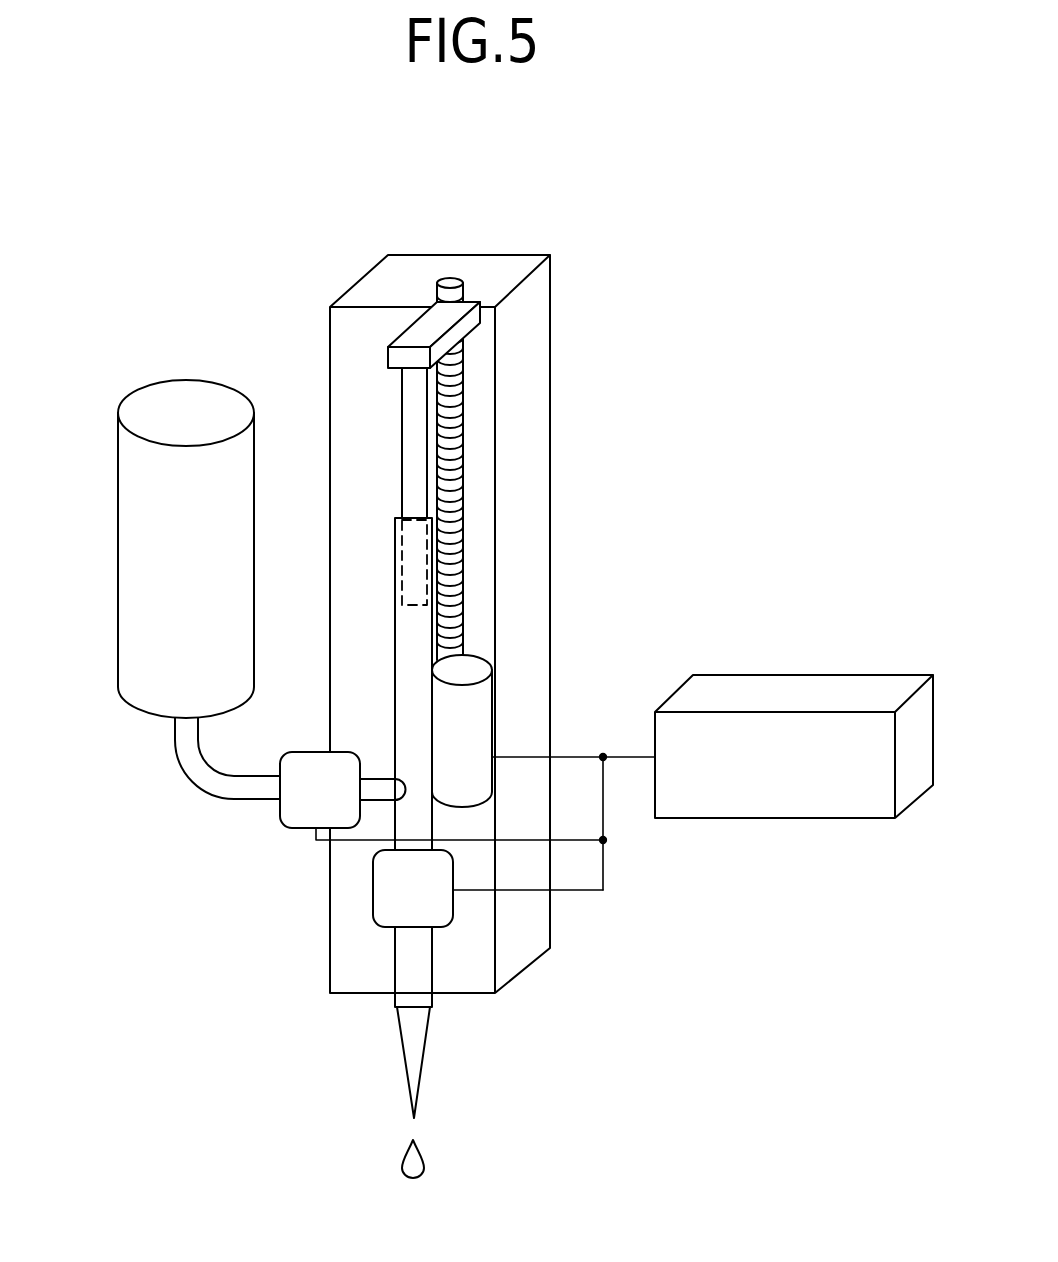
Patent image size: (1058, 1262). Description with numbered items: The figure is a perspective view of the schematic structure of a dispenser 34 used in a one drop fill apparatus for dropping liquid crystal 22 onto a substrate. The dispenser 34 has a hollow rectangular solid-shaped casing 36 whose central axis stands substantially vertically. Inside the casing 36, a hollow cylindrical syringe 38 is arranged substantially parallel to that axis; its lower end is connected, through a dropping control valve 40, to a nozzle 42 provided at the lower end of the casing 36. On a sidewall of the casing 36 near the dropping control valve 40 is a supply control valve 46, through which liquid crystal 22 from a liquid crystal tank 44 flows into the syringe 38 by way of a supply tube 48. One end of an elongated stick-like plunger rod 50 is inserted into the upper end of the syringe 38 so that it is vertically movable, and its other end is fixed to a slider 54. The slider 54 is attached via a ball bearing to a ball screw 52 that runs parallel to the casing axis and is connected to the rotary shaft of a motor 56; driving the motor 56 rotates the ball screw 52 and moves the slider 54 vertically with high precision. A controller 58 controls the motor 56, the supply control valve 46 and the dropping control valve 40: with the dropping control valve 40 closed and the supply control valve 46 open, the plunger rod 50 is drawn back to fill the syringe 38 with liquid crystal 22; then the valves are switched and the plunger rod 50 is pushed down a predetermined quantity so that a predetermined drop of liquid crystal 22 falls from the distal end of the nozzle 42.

The liquid crystal 22 is at (423, 1160).
The dispenser 34 is at (528, 222).
The casing 36 is at (552, 437).
The syringe 38 is at (405, 670).
The dropping control valve 40 is at (395, 906).
The nozzle 42 is at (412, 1058).
The liquid crystal tank 44 is at (124, 540).
The supply control valve 46 is at (302, 806).
The supply tube 48 is at (212, 792).
The plunger rod 50 is at (407, 413).
The ball screw 52 is at (464, 535).
The slider 54 is at (417, 332).
The motor 56 is at (482, 715).
The controller 58 is at (762, 782).